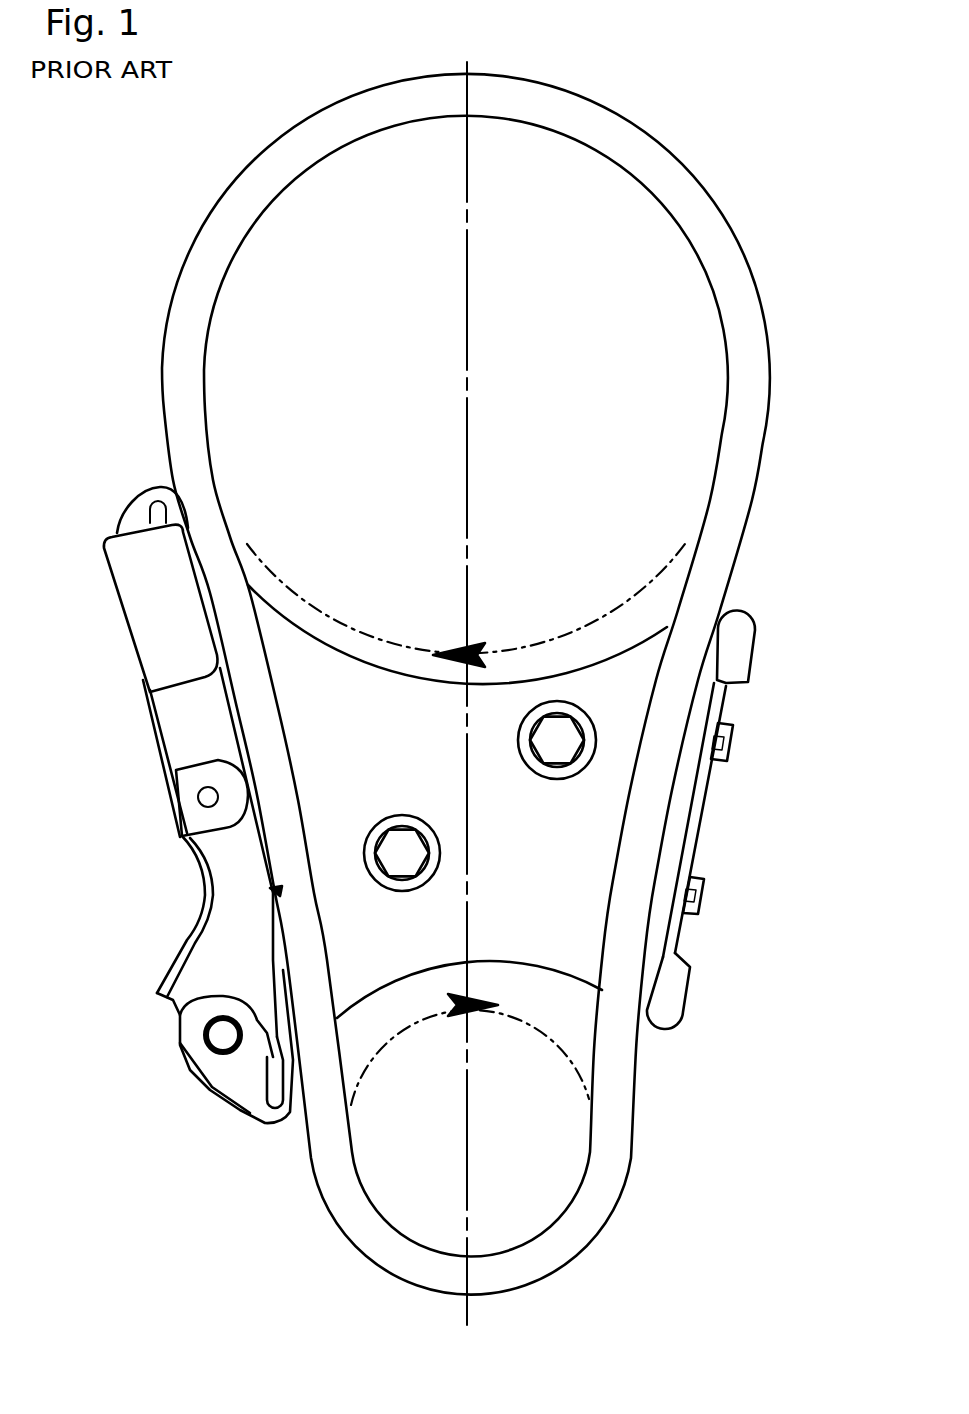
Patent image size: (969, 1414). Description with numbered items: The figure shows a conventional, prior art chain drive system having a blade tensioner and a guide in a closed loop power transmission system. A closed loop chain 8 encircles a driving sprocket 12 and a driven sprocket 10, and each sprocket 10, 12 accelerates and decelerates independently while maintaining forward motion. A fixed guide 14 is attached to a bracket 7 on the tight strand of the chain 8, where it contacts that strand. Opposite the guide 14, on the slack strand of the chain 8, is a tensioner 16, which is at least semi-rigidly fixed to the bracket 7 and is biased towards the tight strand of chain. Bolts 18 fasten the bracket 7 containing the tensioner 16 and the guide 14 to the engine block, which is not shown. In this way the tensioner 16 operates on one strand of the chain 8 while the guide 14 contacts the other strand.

The bracket 7 is at (578, 848).
The closed loop chain 8 is at (553, 113).
The driven sprocket 10 is at (606, 244).
The driving sprocket 12 is at (552, 1185).
The fixed guide 14 is at (731, 648).
The tensioner 16 is at (223, 947).
The bolts 18 is at (543, 777).